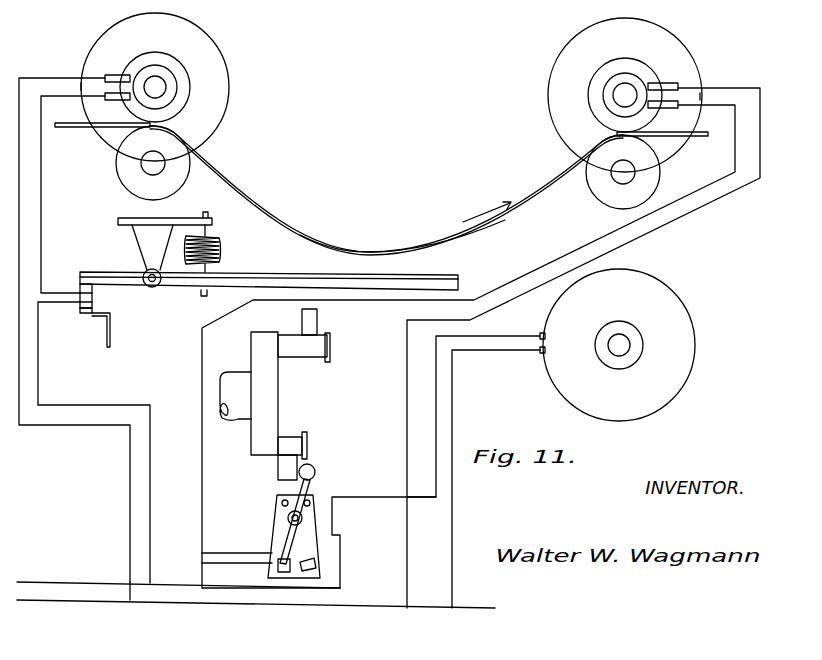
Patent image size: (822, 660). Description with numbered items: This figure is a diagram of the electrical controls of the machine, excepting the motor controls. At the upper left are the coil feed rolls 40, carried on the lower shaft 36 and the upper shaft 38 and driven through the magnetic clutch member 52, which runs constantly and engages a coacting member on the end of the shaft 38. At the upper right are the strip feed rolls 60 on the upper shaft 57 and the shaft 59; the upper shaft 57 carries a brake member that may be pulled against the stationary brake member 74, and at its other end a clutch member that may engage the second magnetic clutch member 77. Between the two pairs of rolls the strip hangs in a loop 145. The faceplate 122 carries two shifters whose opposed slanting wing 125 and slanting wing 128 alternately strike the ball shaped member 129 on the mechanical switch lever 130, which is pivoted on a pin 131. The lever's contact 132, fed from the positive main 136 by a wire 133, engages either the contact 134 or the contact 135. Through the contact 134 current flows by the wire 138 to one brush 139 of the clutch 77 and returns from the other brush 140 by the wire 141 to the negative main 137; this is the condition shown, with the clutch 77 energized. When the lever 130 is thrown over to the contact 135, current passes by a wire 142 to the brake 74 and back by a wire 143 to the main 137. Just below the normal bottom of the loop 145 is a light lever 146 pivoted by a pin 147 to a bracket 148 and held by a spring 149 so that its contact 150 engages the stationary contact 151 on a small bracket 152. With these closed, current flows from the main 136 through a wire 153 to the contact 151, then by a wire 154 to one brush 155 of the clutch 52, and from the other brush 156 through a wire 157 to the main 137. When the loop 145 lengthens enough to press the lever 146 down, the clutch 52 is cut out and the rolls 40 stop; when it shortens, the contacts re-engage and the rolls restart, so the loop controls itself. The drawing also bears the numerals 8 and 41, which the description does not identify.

The strip material 8 is at (235, 396).
The shaft 36 is at (141, 167).
The shaft 38 is at (168, 94).
The feed rolls 40 is at (172, 80).
The strip / web 41 is at (240, 193).
The magnetic clutch member 52 is at (226, 58).
The upper shaft 57 is at (617, 103).
The shaft 59 is at (636, 172).
The strip feed rolls 60 is at (590, 94).
The stationary brake member 74 is at (683, 302).
The second magnetic clutch member 77 is at (565, 52).
The faceplate 122 is at (268, 405).
The slanting wing 125 is at (318, 322).
The slanting wing 128 is at (278, 462).
The ball shaped member 129 is at (315, 466).
The mechanical switch lever 130 is at (308, 487).
The pin 131 is at (302, 518).
The contact 132 is at (275, 548).
The wire 133 is at (342, 548).
The contact 134 is at (277, 565).
The contact 135 is at (316, 567).
The positive main 136 is at (115, 582).
The negative main 137 is at (477, 610).
The wire 138 is at (606, 235).
The brush 139 is at (662, 124).
The brush 140 is at (673, 86).
The wire 141 is at (730, 87).
The wire 142 is at (508, 335).
The wire 143 is at (501, 351).
The loop 145 is at (405, 227).
The light lever 146 is at (461, 278).
The pin 147 is at (145, 270).
The bracket 148 is at (165, 241).
The spring 149 is at (222, 252).
The contact 150 is at (93, 293).
The stationary contact 151 is at (127, 321).
The small bracket 152 is at (112, 342).
The wire 153 is at (151, 514).
The wire 154 is at (42, 215).
The brush 155 is at (110, 101).
The brush 156 is at (113, 75).
The wire 157 is at (78, 77).